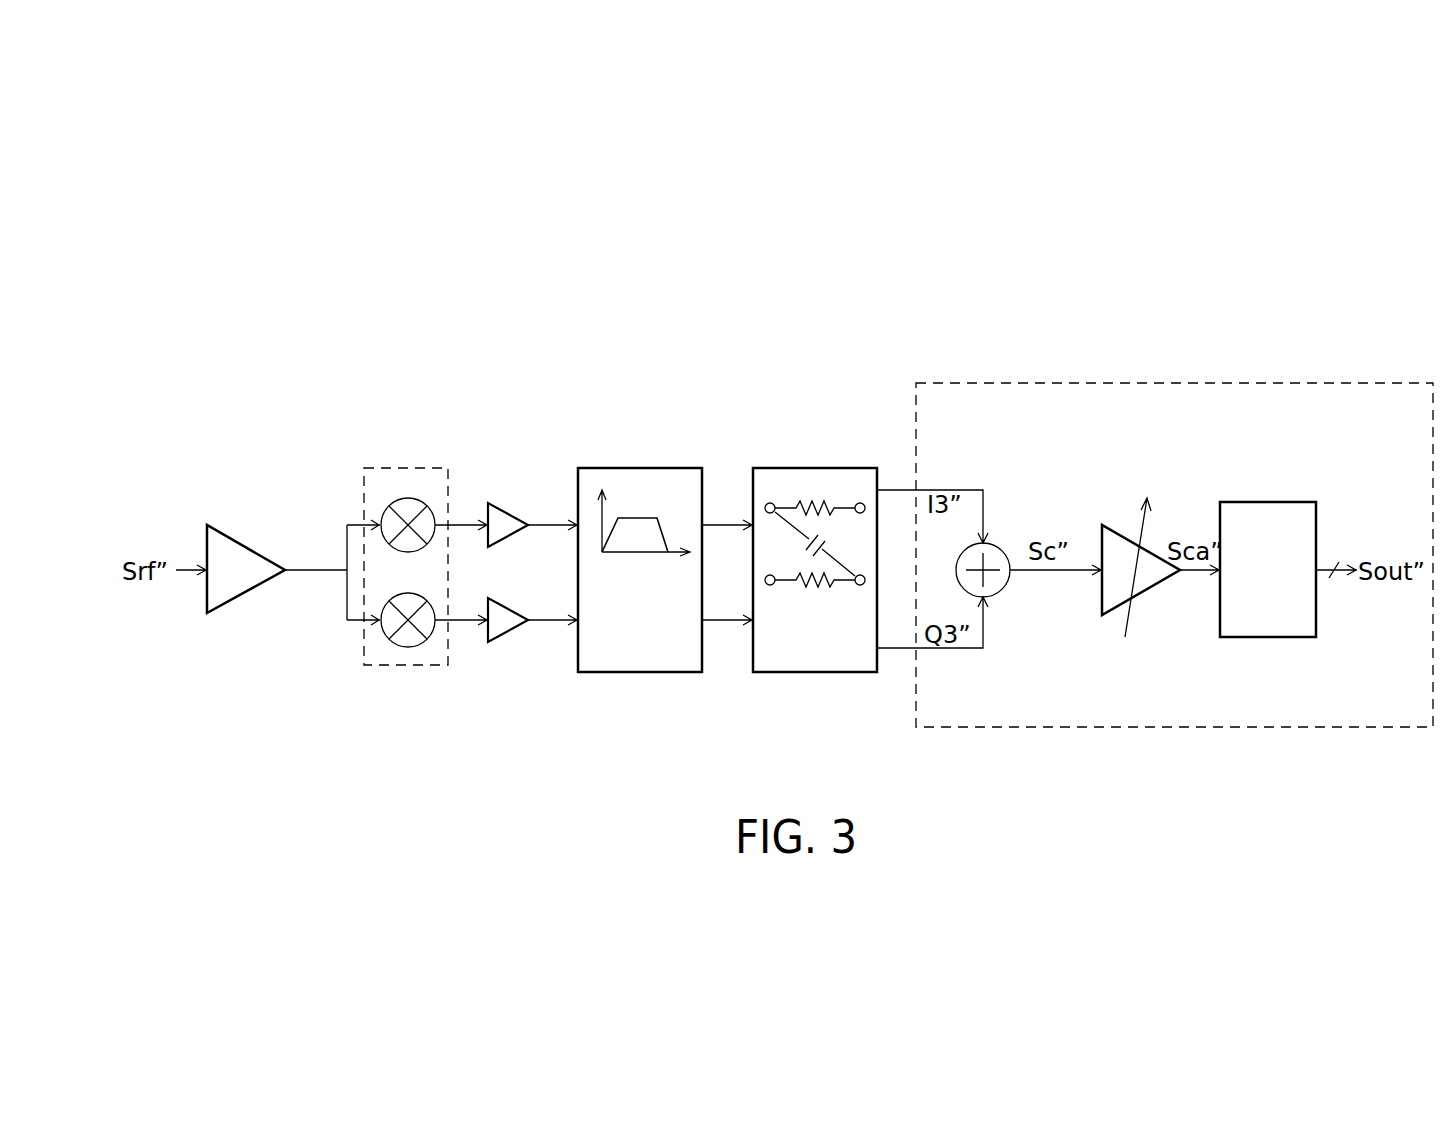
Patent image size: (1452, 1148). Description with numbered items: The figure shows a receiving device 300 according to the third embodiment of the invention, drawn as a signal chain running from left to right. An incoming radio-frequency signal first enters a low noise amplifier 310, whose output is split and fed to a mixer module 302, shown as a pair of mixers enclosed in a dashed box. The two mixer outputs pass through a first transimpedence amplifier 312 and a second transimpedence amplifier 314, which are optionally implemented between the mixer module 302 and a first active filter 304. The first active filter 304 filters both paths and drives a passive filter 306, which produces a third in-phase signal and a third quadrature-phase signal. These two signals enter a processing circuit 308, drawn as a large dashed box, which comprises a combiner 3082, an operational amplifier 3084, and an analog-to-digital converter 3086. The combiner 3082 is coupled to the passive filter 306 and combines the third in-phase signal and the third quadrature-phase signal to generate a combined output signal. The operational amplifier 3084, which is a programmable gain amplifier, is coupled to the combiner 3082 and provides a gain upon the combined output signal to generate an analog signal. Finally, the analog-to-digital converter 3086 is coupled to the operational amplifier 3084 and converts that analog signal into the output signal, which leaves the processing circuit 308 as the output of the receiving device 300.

The receiving device 300 is at (1292, 232).
The mixer module 302 is at (398, 468).
The first active filter 304 is at (650, 468).
The passive filter 306 is at (812, 468).
The processing circuit 308 is at (1188, 383).
The low noise amplifier 310 is at (245, 540).
The first transimpedence amplifier 312 is at (507, 505).
The second transimpedence amplifier 314 is at (507, 640).
The combiner 3082 is at (1003, 543).
The operational amplifier 3084 is at (1117, 527).
The analog-to-digital converter 3086 is at (1272, 502).